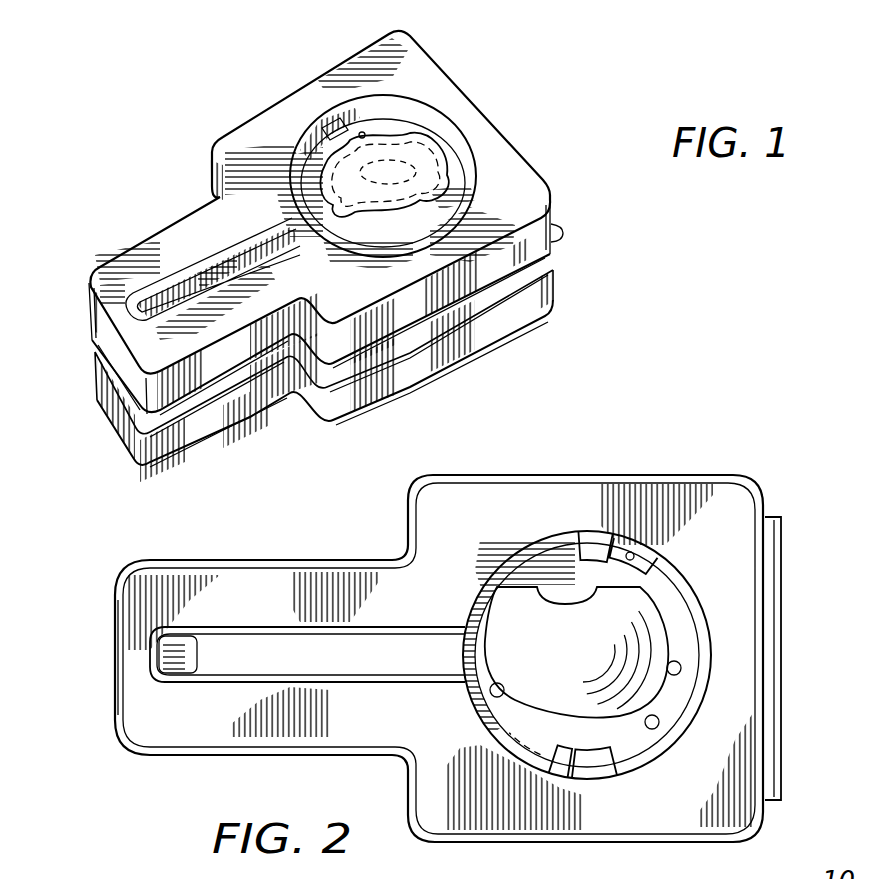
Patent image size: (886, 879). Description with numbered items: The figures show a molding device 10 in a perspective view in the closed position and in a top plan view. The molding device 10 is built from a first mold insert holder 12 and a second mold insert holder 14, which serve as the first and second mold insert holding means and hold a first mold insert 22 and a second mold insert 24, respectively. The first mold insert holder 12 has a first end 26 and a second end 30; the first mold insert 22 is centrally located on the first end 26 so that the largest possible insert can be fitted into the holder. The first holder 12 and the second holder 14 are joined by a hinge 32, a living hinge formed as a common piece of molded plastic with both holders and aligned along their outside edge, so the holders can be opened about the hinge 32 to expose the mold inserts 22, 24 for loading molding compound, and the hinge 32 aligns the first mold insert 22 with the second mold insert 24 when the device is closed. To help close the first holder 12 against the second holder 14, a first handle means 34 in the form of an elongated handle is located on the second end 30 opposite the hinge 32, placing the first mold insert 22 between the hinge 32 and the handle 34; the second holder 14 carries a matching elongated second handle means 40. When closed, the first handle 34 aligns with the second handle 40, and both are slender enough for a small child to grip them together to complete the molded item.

In FIG. 1, the molding device 10 is at (524, 50).
In FIG. 2, the molding device 10 is at (716, 432).
In FIG. 1, the first mold insert holder 12 is at (427, 371).
In FIG. 2, the first mold insert holder 12 is at (170, 556).
In FIG. 1, the second mold insert holder 14 is at (490, 278).
In FIG. 2, the first mold insert 22 is at (563, 583).
In FIG. 1, the second mold insert 24 is at (440, 148).
In FIG. 2, the first end 26 is at (722, 518).
In FIG. 2, the second end 30 is at (164, 715).
In FIG. 1, the hinge 32 is at (563, 233).
In FIG. 2, the hinge 32 is at (783, 570).
In FIG. 1, the first handle means 34 is at (187, 447).
In FIG. 2, the first handle means 34 is at (232, 575).
In FIG. 1, the second handle means 40 is at (157, 347).